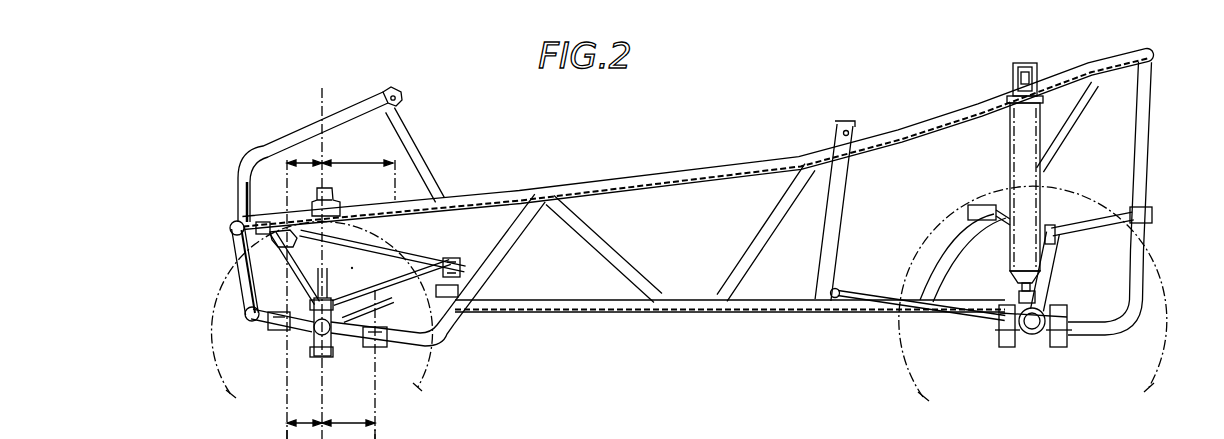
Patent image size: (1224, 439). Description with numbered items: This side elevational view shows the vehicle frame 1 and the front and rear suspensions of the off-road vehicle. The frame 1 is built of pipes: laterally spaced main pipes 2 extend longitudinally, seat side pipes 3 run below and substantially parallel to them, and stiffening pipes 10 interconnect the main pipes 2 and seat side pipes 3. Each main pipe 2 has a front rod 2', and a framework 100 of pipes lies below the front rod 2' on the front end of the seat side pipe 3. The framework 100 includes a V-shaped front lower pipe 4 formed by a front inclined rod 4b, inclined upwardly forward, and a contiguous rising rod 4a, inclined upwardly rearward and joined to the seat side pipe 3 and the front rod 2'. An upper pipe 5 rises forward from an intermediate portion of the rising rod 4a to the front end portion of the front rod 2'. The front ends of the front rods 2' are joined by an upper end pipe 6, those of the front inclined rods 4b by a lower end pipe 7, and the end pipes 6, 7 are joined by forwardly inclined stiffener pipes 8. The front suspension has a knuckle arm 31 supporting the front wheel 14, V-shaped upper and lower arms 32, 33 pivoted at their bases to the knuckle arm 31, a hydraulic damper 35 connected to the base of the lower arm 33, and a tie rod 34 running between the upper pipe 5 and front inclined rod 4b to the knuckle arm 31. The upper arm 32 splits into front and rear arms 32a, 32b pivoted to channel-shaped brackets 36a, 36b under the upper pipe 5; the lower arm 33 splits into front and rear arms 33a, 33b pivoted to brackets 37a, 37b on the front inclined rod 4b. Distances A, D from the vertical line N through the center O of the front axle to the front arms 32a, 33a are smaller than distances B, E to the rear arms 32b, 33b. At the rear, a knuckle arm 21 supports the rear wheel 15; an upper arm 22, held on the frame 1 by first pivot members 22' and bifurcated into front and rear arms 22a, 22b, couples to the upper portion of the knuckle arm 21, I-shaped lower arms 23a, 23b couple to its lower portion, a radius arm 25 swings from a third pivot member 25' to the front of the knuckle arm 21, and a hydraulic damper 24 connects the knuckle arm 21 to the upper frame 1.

The vehicle frame 1 is at (731, 146).
The main pipes 2 is at (697, 138).
The front rods 2' is at (369, 154).
The seat side pipes 3 is at (609, 305).
The front lower pipe 4 is at (441, 335).
The rising rod 4a is at (500, 253).
The front inclined rod 4b is at (305, 303).
The upper pipe 5 is at (370, 252).
The upper end pipe 6 is at (230, 224).
The lower end pipe 7 is at (253, 321).
The stiffener pipes 8 is at (236, 278).
The stiffening pipes 10 is at (605, 243).
The front wheel 14 is at (212, 318).
The rear wheel 15 is at (1160, 375).
The knuckle arm 21 is at (1045, 291).
The upper arm 22 is at (1070, 198).
The front arm 22a is at (1020, 278).
The rear arm 22b is at (1083, 228).
The first pivot members 22' is at (1068, 188).
The lower arm 23a is at (1007, 333).
The lower arm 23b is at (1078, 335).
The hydraulic damper 24 is at (1010, 152).
The radius arm 25 is at (922, 283).
The third pivot member 25' is at (859, 252).
The knuckle arm 31 is at (331, 350).
The upper arm 32 is at (185, 218).
The front arm 32a is at (298, 243).
The rear arm 32b is at (462, 292).
The lower arm 33 is at (202, 372).
The front arm 33a is at (292, 380).
The rear arm 33b is at (384, 378).
The tie rod 34 is at (376, 310).
The hydraulic damper 35 is at (358, 216).
The front channel-shaped bracket 36a is at (258, 213).
The rear channel-shaped bracket 36b is at (405, 290).
The front channel-shaped bracket 37a is at (281, 331).
The rear channel-shaped bracket 37b is at (387, 345).
The framework 100 is at (457, 327).
The distance A is at (306, 164).
The distance B is at (357, 155).
The vertical line N is at (322, 100).
The center O is at (352, 268).
The distance D is at (301, 432).
The distance E is at (356, 431).